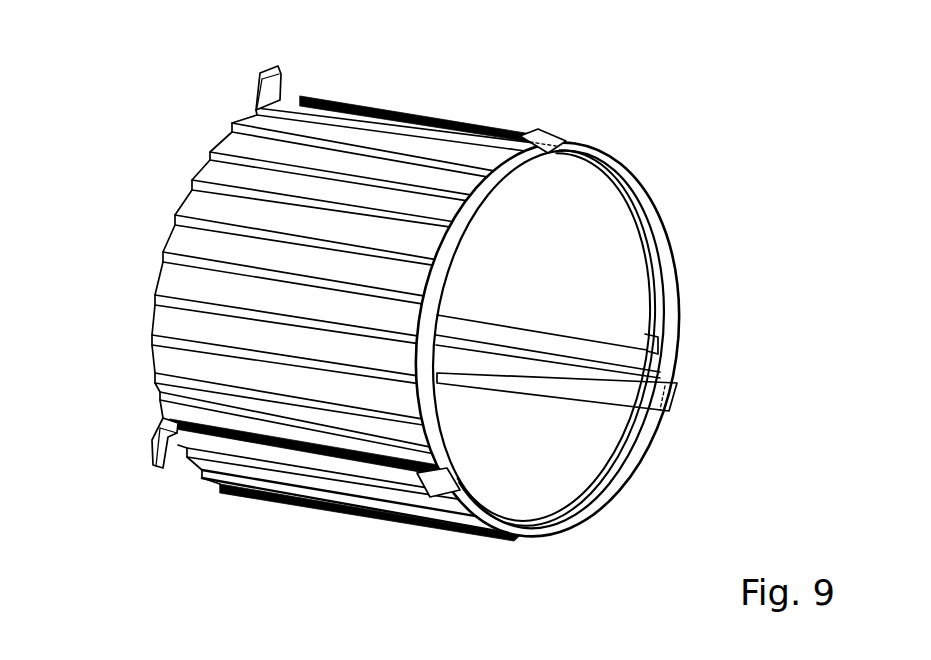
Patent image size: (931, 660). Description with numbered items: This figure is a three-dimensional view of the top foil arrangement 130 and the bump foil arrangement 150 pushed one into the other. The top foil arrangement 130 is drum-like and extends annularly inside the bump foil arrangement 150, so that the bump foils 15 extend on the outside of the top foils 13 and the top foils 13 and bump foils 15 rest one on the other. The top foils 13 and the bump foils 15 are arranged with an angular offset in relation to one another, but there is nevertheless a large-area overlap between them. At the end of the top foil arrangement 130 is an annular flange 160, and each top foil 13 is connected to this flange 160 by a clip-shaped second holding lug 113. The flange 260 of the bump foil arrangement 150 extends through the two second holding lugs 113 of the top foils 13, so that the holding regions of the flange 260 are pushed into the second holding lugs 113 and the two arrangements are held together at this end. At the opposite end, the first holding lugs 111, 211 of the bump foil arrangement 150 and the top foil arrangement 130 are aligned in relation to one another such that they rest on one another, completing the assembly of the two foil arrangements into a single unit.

The top foil 13 is at (613, 310).
The bump foil 15 is at (212, 205).
The first holding lug 111 is at (281, 76).
The second holding lug 113 is at (540, 130).
The top foil arrangement 130 is at (573, 272).
The bump foil arrangement 150 is at (457, 120).
The annular flange 160 is at (648, 208).
The first holding lug 211 is at (281, 88).
The flange 260 is at (467, 219).